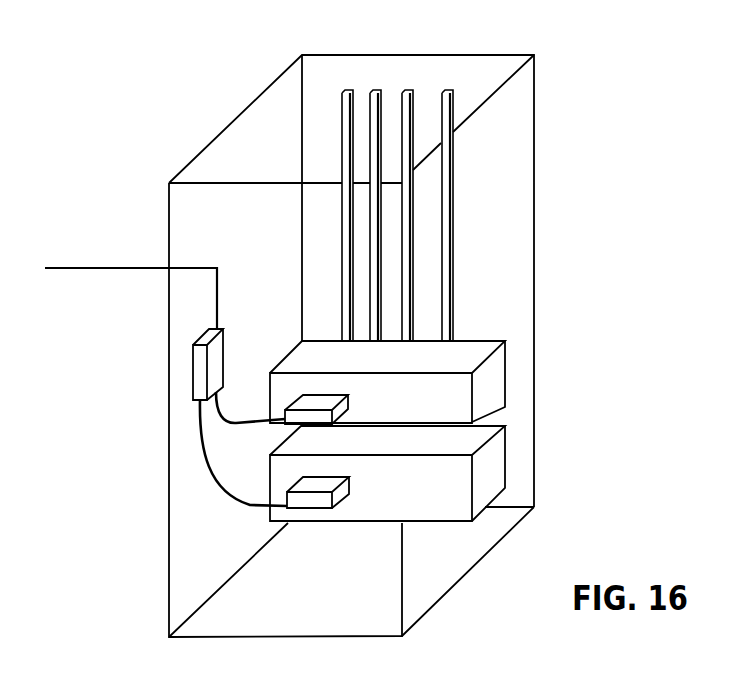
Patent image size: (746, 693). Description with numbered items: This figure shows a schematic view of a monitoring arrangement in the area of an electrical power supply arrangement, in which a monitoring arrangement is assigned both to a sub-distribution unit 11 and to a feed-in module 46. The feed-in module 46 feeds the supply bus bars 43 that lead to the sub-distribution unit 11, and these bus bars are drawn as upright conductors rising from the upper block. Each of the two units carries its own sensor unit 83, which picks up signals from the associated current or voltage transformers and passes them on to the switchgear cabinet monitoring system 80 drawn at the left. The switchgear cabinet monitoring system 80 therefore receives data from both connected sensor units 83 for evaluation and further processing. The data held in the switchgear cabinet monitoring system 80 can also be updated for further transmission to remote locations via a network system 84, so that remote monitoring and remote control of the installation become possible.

The sub-distribution unit 11 is at (507, 382).
The supply bus bars 43 is at (345, 88).
The feed-in module 46 is at (509, 455).
The switchgear cabinet monitoring system 80 is at (192, 342).
The sensor unit 83 is at (282, 432).
The network system 84 is at (133, 266).